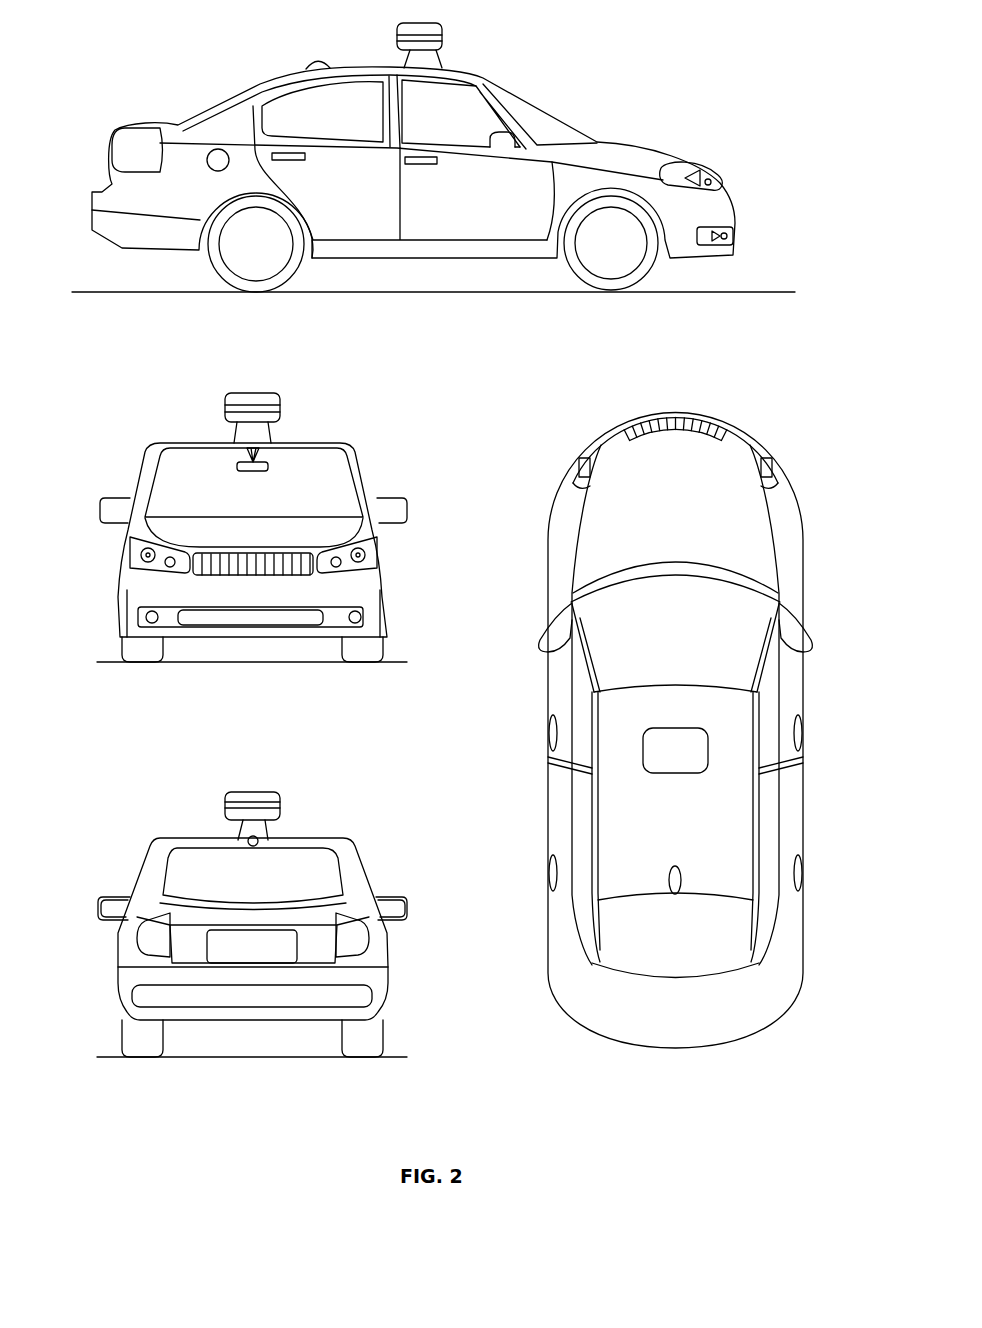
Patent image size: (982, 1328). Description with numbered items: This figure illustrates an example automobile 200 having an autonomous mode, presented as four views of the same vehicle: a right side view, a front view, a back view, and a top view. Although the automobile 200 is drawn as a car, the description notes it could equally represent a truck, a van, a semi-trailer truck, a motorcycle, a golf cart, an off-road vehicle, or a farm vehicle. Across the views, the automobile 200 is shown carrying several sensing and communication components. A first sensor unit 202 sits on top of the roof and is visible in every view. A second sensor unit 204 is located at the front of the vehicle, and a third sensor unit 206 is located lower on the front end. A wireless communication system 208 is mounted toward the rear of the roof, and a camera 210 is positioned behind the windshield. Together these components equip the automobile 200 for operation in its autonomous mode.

The automobile 200 is at (92, 112).
The first sensor unit 202 is at (445, 45).
The second sensor unit 204 is at (716, 184).
The third sensor unit 206 is at (141, 617).
The wireless communication system 208 is at (315, 63).
The camera 210 is at (266, 458).